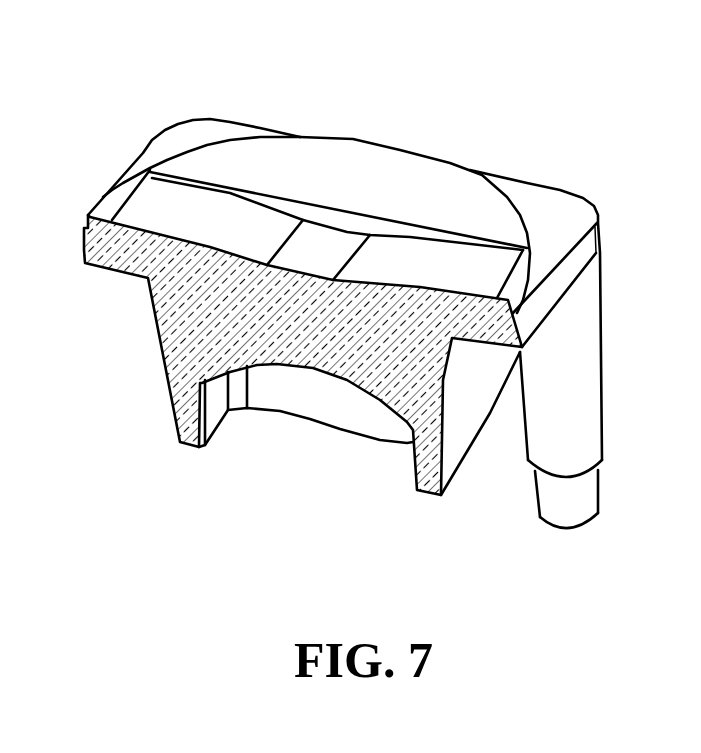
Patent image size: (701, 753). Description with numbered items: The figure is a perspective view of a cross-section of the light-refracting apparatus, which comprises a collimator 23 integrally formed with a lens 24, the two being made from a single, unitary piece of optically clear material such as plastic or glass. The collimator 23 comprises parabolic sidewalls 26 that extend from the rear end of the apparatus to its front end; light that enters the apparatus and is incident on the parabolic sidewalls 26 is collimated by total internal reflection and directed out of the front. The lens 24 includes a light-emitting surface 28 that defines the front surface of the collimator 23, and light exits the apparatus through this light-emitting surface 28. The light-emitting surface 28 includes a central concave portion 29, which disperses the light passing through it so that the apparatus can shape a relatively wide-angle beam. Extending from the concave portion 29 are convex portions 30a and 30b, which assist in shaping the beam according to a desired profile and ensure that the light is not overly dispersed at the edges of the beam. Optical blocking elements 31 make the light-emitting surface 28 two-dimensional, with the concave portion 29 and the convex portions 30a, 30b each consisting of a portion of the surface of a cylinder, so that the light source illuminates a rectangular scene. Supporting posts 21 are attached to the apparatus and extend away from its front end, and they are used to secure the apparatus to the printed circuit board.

The supporting post 21 is at (603, 417).
The collimator 23 is at (151, 337).
The lens 24 is at (270, 233).
The parabolic sidewall 26 is at (160, 370).
The light-emitting surface 28 is at (213, 210).
The central concave portion 29 is at (322, 243).
The convex portion 30a is at (175, 203).
The convex portion 30b is at (465, 267).
The optical blocking element 31 is at (380, 160).